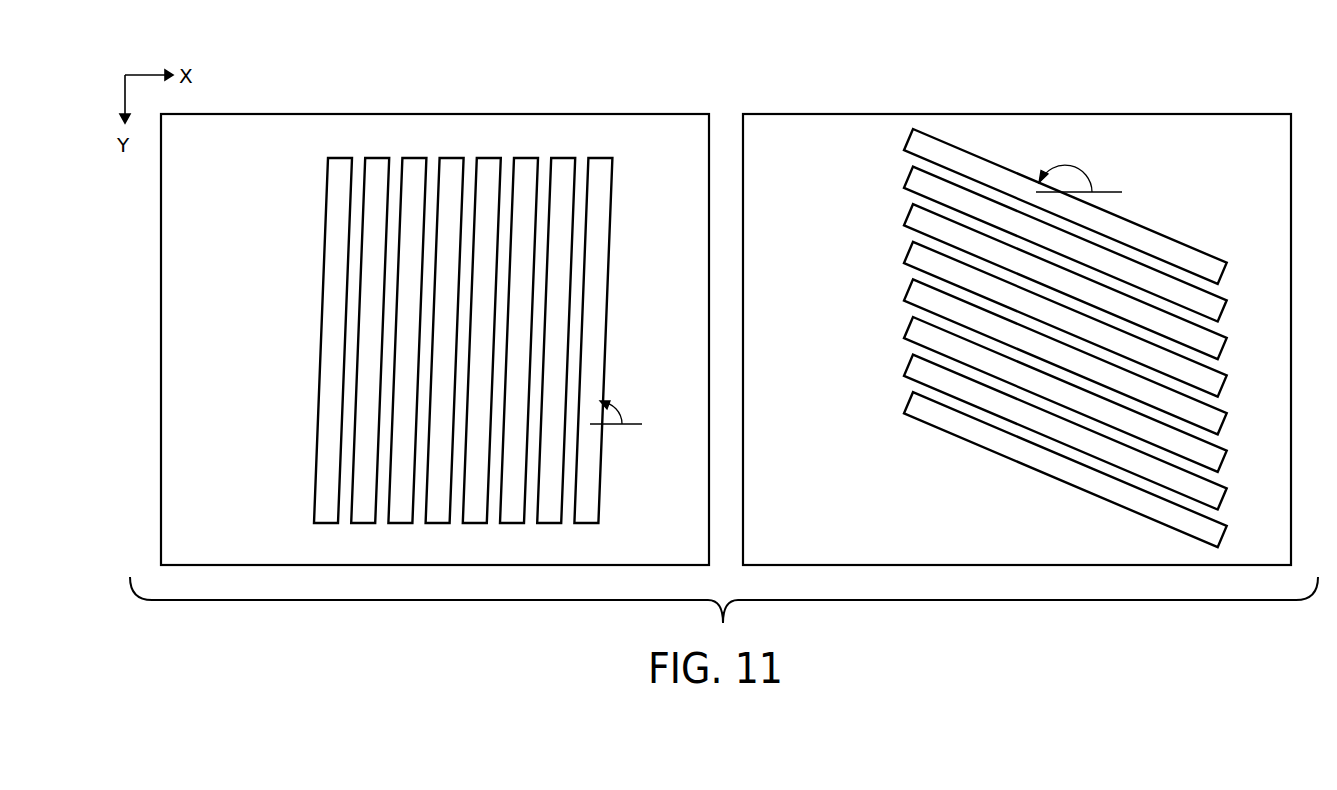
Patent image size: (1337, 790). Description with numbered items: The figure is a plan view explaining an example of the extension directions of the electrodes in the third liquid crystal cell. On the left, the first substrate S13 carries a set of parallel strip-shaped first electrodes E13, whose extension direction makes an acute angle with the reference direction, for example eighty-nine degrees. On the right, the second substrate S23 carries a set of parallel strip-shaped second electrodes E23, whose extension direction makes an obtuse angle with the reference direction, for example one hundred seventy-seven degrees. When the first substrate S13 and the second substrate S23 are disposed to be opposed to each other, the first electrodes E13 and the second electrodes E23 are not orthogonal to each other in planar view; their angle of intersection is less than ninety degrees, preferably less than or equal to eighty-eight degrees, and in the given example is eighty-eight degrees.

The first substrate S13 is at (631, 114).
The first electrodes E13 is at (606, 289).
The second substrate S23 is at (1214, 114).
The second electrodes E23 is at (1165, 243).